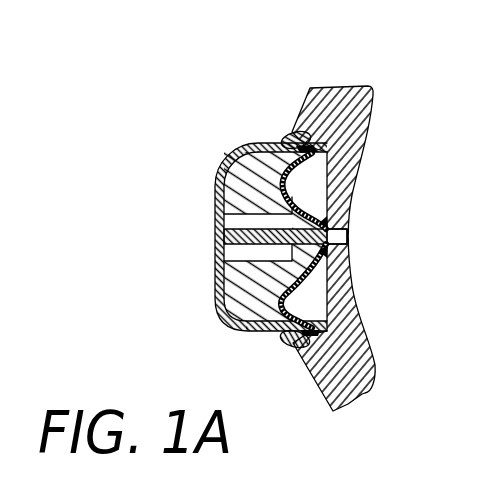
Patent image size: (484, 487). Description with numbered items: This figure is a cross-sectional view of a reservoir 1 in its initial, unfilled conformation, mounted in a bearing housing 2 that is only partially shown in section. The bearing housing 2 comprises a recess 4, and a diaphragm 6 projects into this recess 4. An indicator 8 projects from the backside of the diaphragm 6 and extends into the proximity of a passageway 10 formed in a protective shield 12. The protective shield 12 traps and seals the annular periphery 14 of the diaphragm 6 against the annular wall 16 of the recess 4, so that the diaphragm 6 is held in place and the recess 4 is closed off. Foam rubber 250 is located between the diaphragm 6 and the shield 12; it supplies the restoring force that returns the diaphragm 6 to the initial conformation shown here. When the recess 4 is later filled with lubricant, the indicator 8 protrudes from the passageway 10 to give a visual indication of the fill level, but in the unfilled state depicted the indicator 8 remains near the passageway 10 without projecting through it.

The reservoir 1 is at (204, 116).
The bearing housing 2 is at (332, 97).
The recess 4 is at (261, 145).
The diaphragm 6 is at (258, 323).
The indicator 8 is at (222, 237).
The passageway 10 is at (217, 218).
The protective shield 12 is at (221, 307).
The annular periphery 14 is at (290, 339).
The annular wall 16 is at (292, 130).
The foam rubber 250 is at (224, 165).